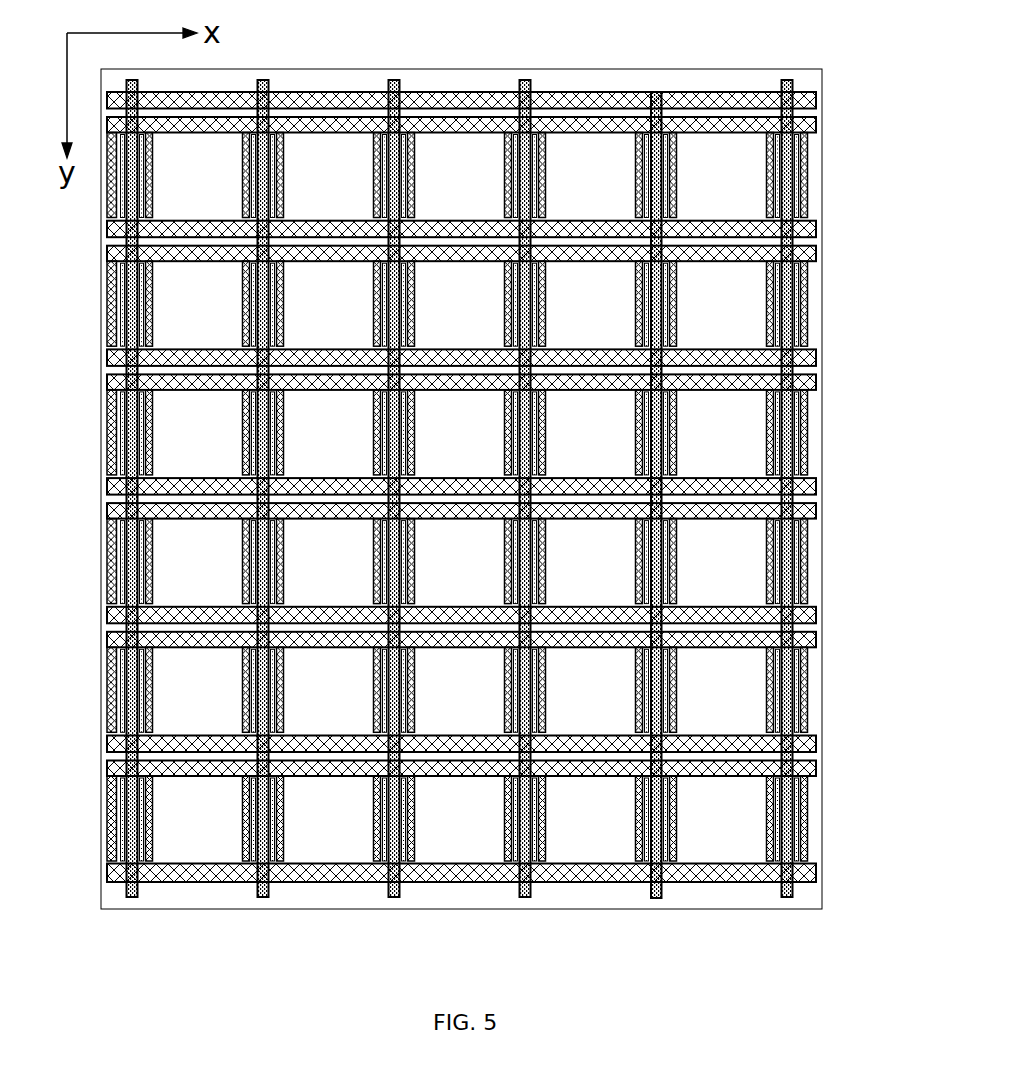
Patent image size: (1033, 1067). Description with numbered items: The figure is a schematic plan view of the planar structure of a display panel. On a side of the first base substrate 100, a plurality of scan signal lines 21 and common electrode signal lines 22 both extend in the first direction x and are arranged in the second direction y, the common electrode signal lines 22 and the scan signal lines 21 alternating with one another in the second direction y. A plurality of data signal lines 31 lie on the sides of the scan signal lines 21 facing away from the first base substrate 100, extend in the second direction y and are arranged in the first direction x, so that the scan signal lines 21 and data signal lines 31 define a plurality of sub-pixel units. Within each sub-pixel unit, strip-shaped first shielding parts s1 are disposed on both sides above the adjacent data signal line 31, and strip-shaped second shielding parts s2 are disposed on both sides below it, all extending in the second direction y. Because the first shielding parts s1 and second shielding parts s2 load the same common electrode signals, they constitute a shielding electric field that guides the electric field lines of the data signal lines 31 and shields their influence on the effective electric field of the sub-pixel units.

The first base substrate 100 is at (822, 180).
The scan signal line 21 is at (107, 357).
The common electrode signal line 22 is at (107, 380).
The data signal line 31 is at (393, 80).
The first shielding part s1 is at (794, 433).
The second shielding part s2 is at (809, 565).